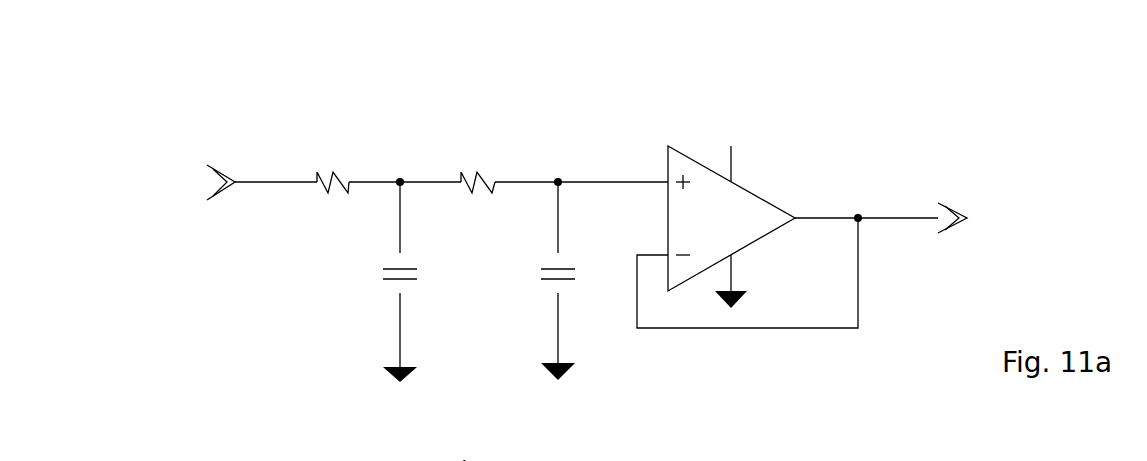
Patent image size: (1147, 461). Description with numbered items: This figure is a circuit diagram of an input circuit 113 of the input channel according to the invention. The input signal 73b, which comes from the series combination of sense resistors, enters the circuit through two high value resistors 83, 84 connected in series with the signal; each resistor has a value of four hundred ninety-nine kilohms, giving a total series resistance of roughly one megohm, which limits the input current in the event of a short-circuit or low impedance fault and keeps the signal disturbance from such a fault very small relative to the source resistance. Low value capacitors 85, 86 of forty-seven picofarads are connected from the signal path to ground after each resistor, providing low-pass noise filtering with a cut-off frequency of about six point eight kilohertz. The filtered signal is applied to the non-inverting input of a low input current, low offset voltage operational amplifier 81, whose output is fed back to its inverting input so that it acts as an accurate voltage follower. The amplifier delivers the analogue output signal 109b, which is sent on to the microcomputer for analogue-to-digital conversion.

The primary input circuit 113 is at (134, 80).
The signal 73b is at (199, 182).
The resistor 83 is at (333, 100).
The resistor 84 is at (491, 100).
The capacitor 85 is at (422, 322).
The capacitor 86 is at (568, 305).
The operational amplifier 81 is at (675, 128).
The analogue output signal 109b is at (989, 220).